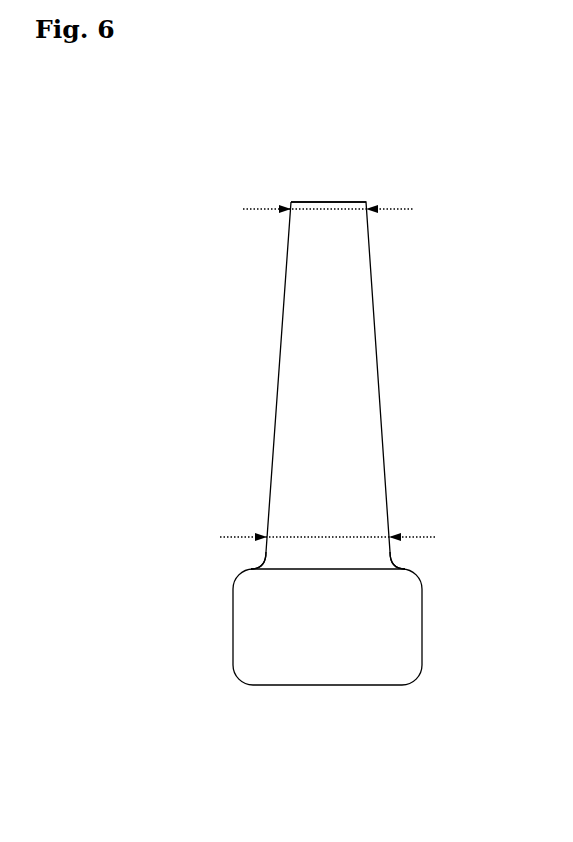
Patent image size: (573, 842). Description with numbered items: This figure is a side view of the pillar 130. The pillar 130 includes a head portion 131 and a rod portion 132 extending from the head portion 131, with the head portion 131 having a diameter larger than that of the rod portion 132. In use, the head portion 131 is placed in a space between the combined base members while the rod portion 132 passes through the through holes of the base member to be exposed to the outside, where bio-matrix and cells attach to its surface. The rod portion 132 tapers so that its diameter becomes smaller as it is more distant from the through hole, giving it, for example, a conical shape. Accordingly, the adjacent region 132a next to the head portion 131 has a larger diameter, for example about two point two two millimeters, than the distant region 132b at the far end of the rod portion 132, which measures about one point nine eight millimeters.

The pillar 130 is at (280, 433).
The head portion 131 is at (324, 689).
The rod portion 132 is at (278, 363).
The adjacent region 132a is at (402, 511).
The distant region 132b is at (350, 178).